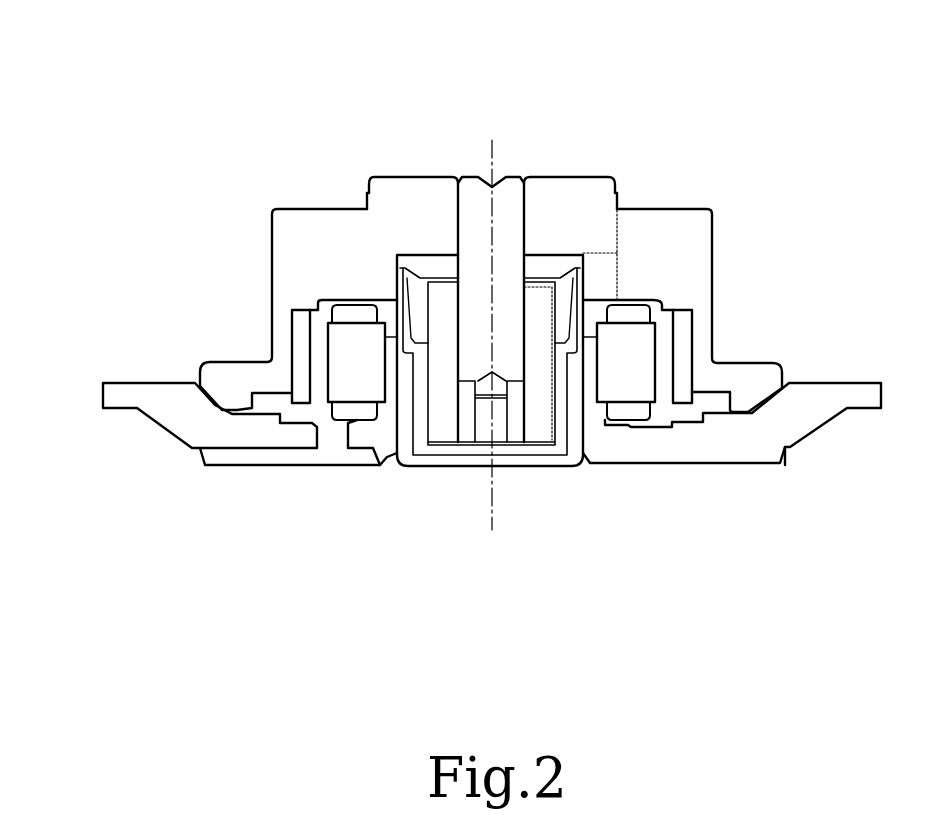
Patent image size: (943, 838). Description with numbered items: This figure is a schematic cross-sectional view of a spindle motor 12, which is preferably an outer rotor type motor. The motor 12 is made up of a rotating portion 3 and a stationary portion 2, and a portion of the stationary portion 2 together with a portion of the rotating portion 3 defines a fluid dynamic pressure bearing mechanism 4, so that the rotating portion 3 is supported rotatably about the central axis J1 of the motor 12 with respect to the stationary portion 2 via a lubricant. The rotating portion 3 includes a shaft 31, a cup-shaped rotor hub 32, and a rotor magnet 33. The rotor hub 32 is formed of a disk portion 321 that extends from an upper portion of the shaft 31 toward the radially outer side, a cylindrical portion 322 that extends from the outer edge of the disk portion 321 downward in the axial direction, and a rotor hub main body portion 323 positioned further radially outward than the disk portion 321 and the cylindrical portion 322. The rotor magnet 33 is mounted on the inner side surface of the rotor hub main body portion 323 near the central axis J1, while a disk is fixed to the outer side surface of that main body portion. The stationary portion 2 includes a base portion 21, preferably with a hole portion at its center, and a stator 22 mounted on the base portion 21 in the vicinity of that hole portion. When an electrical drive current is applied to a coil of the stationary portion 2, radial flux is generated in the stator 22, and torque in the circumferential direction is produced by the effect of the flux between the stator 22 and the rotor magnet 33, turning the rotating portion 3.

The motor 12 is at (198, 100).
The stationary portion 2 is at (558, 492).
The base portion 21 is at (728, 438).
The stator 22 is at (632, 373).
The rotating portion 3 is at (637, 72).
The shaft 31 is at (477, 313).
The rotor hub 32 is at (772, 95).
The disk portion 321 is at (582, 195).
The cylindrical portion 322 is at (597, 278).
The rotor hub main body portion 323 is at (695, 248).
The rotor magnet 33 is at (680, 338).
The bearing mechanism 4 is at (385, 86).
The central axis J1 is at (493, 160).